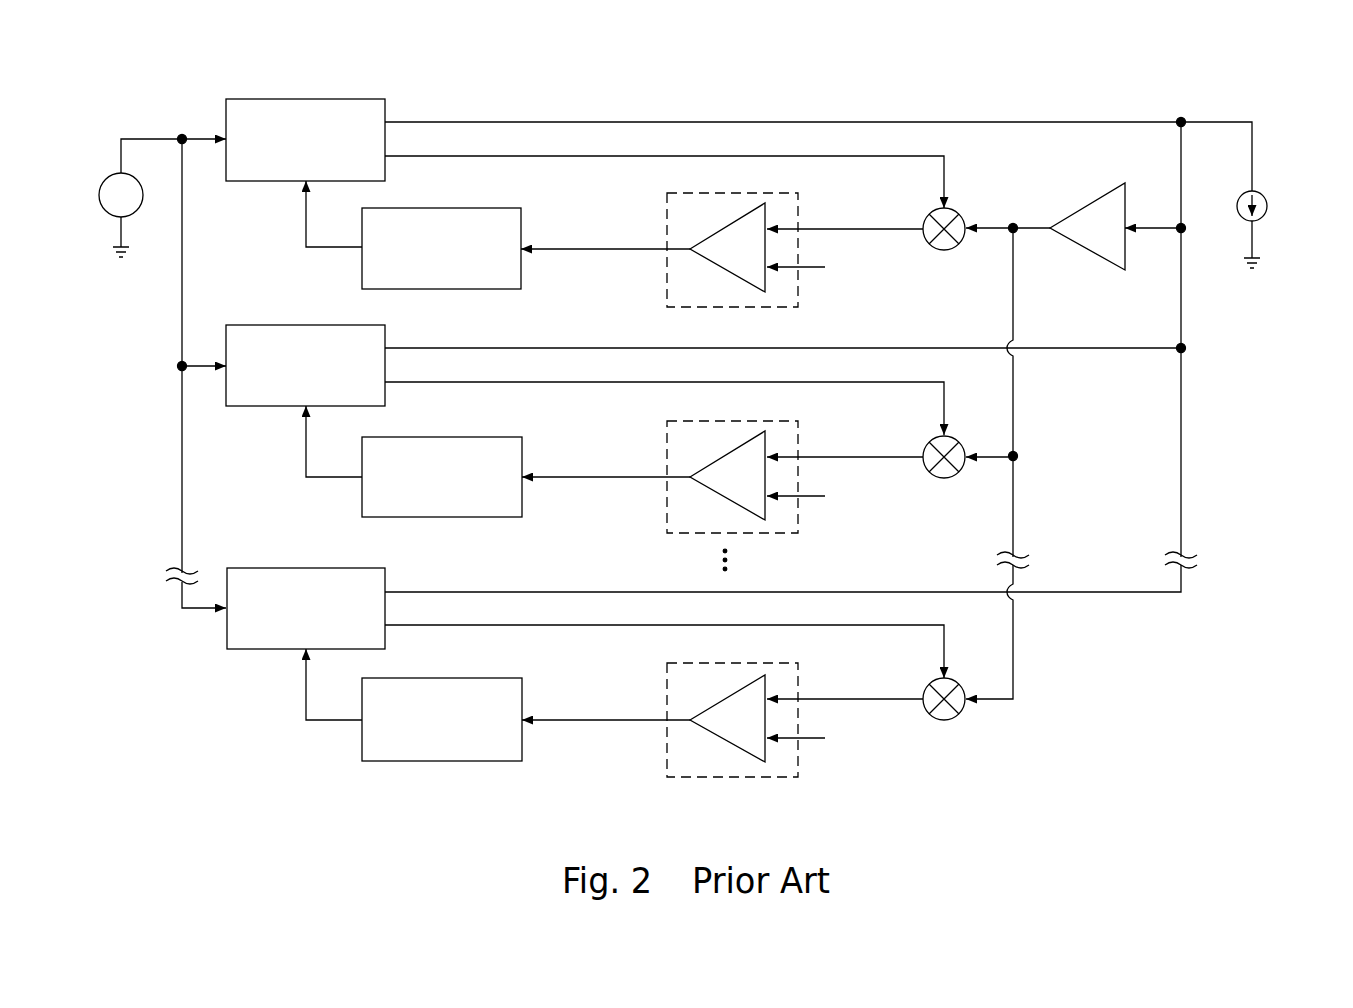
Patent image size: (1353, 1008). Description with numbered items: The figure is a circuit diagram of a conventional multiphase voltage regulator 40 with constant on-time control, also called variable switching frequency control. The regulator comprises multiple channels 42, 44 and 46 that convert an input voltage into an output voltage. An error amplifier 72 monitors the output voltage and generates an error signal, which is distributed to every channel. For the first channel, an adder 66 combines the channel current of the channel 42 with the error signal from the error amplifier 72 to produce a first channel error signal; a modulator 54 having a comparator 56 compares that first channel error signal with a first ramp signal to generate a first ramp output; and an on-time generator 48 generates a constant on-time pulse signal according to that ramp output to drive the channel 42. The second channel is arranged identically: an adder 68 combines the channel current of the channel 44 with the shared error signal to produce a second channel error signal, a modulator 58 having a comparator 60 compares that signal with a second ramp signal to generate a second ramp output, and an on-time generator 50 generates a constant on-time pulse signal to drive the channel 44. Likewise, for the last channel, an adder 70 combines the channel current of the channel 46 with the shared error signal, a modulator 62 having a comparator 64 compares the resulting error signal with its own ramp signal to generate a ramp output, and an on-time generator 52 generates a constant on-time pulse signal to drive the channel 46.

The multiphase voltage regulator 40 is at (1277, 105).
The channel 42 is at (305, 98).
The channel 44 is at (305, 325).
The channel 46 is at (305, 568).
The on-time generator 48 is at (442, 208).
The on-time generator 50 is at (442, 437).
The on-time generator 52 is at (442, 678).
The modulator 54 is at (722, 247).
The comparator 56 is at (727, 275).
The modulator 58 is at (722, 477).
The comparator 60 is at (727, 503).
The modulator 62 is at (723, 717).
The comparator 64 is at (727, 745).
The adder 66 is at (957, 244).
The adder 68 is at (957, 472).
The adder 70 is at (957, 714).
The error amplifier 72 is at (1088, 204).